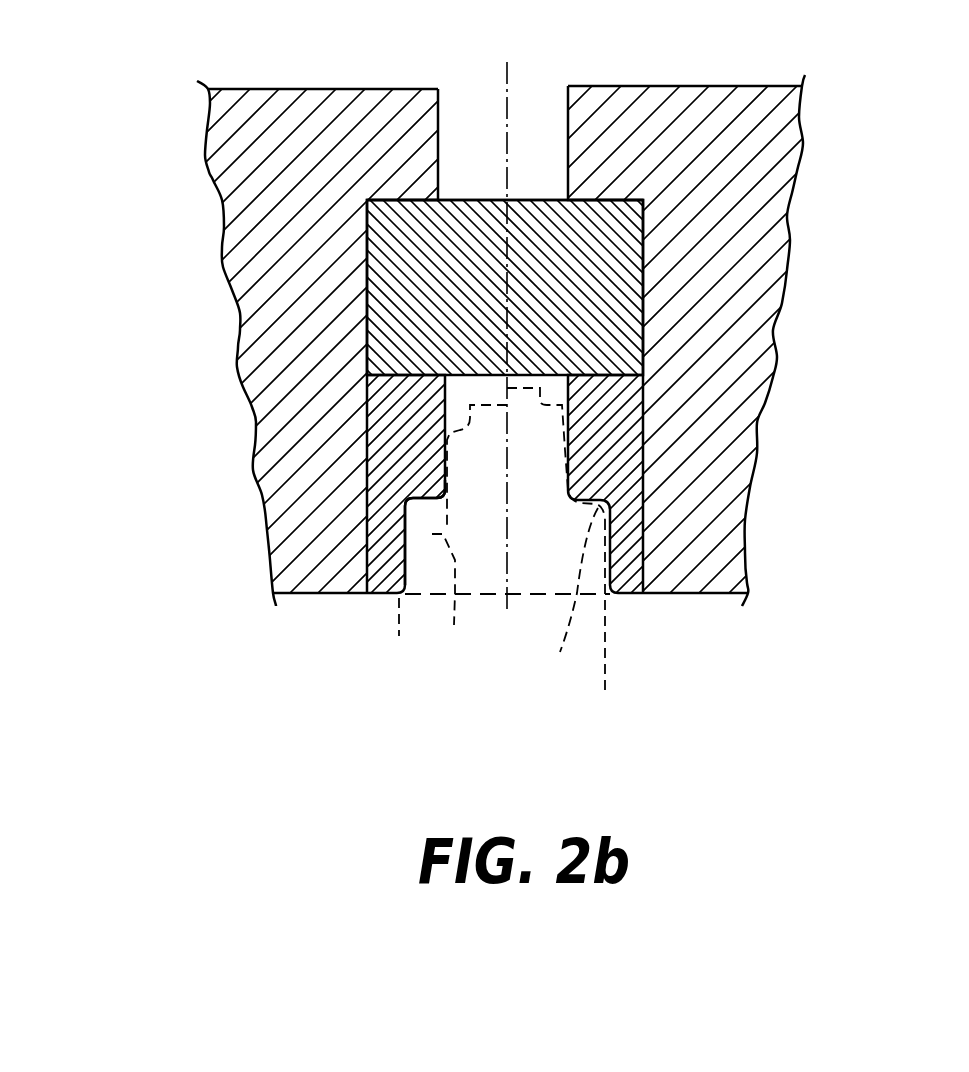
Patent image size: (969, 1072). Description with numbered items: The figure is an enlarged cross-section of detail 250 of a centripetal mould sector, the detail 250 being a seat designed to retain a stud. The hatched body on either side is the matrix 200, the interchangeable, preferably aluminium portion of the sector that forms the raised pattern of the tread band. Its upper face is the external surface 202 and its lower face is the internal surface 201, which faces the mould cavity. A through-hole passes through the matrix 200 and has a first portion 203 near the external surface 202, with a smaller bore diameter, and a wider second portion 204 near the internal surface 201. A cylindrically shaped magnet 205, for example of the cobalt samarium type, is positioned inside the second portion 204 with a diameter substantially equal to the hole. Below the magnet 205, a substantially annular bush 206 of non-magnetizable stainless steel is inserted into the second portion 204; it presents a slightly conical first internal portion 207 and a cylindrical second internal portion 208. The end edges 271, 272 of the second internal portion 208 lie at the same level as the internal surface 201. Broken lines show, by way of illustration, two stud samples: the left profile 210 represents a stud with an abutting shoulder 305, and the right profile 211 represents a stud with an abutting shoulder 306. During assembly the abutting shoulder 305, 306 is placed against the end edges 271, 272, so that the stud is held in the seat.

The detail 250 is at (150, 135).
The matrix 200 is at (272, 268).
The internal surface 201 is at (290, 592).
The external surface 202 is at (248, 89).
The first portion 203 is at (568, 143).
The second portion 204 is at (650, 205).
The magnet 205 is at (608, 285).
The bush 206 is at (625, 422).
The first internal portion 207 is at (442, 410).
The second internal portion 208 is at (405, 517).
The left profile 210 is at (469, 536).
The right profile 211 is at (556, 536).
The end edge 271 is at (380, 594).
The end edge 272 is at (632, 594).
The abutting shoulder 305 is at (410, 598).
The abutting shoulder 306 is at (604, 622).